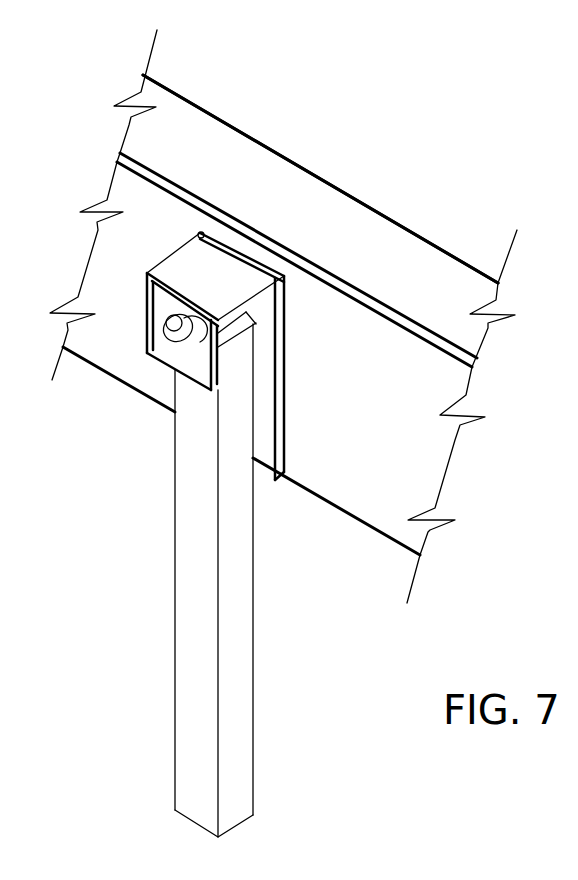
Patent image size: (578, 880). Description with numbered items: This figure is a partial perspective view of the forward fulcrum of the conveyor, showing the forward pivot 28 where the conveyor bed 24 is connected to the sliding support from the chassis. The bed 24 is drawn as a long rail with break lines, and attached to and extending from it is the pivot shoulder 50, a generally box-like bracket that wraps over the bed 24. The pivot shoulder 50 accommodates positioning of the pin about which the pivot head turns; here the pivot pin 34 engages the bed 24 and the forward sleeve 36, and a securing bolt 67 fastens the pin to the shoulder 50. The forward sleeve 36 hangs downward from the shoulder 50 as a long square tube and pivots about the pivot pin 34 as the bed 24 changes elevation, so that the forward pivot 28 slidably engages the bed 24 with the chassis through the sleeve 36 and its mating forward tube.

The bed 24 is at (408, 381).
The forward pivot 28 is at (264, 190).
The pivot shoulder 50 is at (164, 241).
The pivot pin 34 is at (176, 334).
The securing bolt 67 is at (195, 343).
The forward sleeve 36 is at (235, 636).